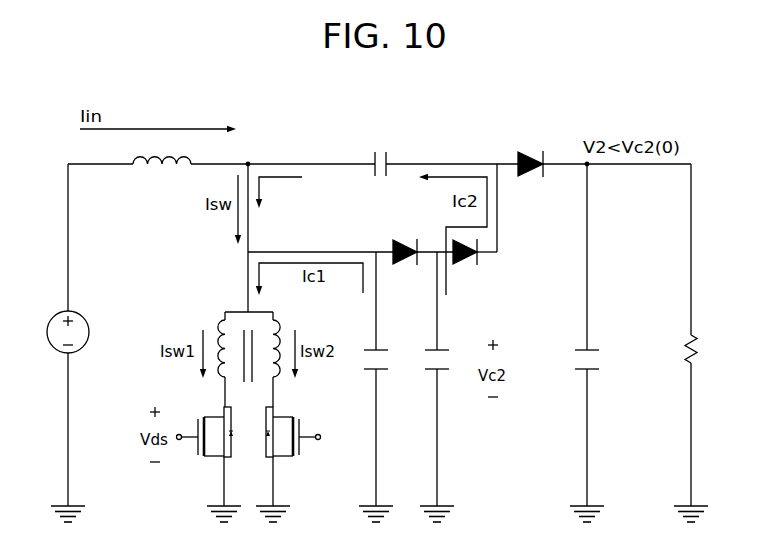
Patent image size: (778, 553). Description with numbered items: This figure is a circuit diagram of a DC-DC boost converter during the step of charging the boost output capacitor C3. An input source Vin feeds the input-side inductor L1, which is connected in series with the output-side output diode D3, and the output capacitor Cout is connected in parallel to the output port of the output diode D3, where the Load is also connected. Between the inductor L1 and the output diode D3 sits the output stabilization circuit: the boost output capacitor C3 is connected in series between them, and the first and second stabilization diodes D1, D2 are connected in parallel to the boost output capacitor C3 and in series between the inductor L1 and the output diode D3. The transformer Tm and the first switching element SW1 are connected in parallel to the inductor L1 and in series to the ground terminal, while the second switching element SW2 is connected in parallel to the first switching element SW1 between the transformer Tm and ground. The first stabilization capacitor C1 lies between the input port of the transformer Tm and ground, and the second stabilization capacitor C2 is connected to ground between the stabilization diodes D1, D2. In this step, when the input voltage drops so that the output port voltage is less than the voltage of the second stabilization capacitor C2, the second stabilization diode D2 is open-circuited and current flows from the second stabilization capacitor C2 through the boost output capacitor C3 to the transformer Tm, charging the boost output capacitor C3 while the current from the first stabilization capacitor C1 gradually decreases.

The input voltage source Vin is at (50, 343).
The inductor L1 is at (162, 184).
The boost output capacitor C3 is at (375, 164).
The first stabilization diode D1 is at (405, 265).
The second stabilization diode D2 is at (466, 265).
The output diode D3 is at (534, 181).
The first stabilization capacitor C1 is at (379, 387).
The second stabilization capacitor C2 is at (441, 387).
The output capacitor Cout is at (605, 343).
The load resistor Load is at (713, 343).
The transformer Tm is at (271, 347).
The first switching element SW1 is at (209, 449).
The second switching element SW2 is at (288, 449).